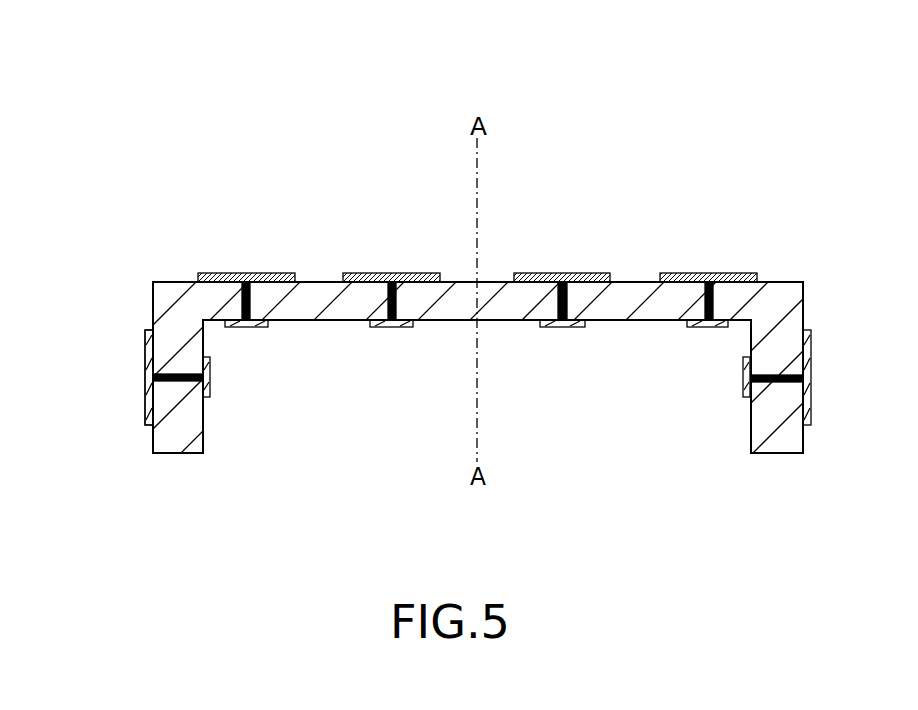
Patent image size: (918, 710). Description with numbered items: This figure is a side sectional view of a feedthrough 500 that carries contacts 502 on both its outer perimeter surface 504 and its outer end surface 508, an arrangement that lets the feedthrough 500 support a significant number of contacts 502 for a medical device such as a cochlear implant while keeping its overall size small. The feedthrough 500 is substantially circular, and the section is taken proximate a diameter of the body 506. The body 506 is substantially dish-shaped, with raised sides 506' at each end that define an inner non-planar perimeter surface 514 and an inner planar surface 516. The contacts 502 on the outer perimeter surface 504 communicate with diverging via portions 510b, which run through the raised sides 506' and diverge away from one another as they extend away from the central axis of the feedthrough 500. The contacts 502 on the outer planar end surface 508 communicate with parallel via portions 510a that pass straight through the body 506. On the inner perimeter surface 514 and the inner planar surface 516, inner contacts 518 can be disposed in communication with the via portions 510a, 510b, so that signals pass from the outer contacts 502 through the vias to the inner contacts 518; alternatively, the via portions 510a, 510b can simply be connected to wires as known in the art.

The feedthrough 500 is at (665, 104).
The contacts 502 is at (415, 275).
The outer perimeter surface 504 is at (140, 440).
The body 506 is at (459, 367).
The raised sides 506' is at (180, 409).
The outer end surface 508 is at (319, 268).
The parallel via portions 510a is at (392, 312).
The diverging via portions 510b is at (775, 382).
The inner non-planar perimeter surface 514 is at (218, 426).
The inner planar surface 516 is at (313, 334).
The inner contacts 518 is at (558, 328).